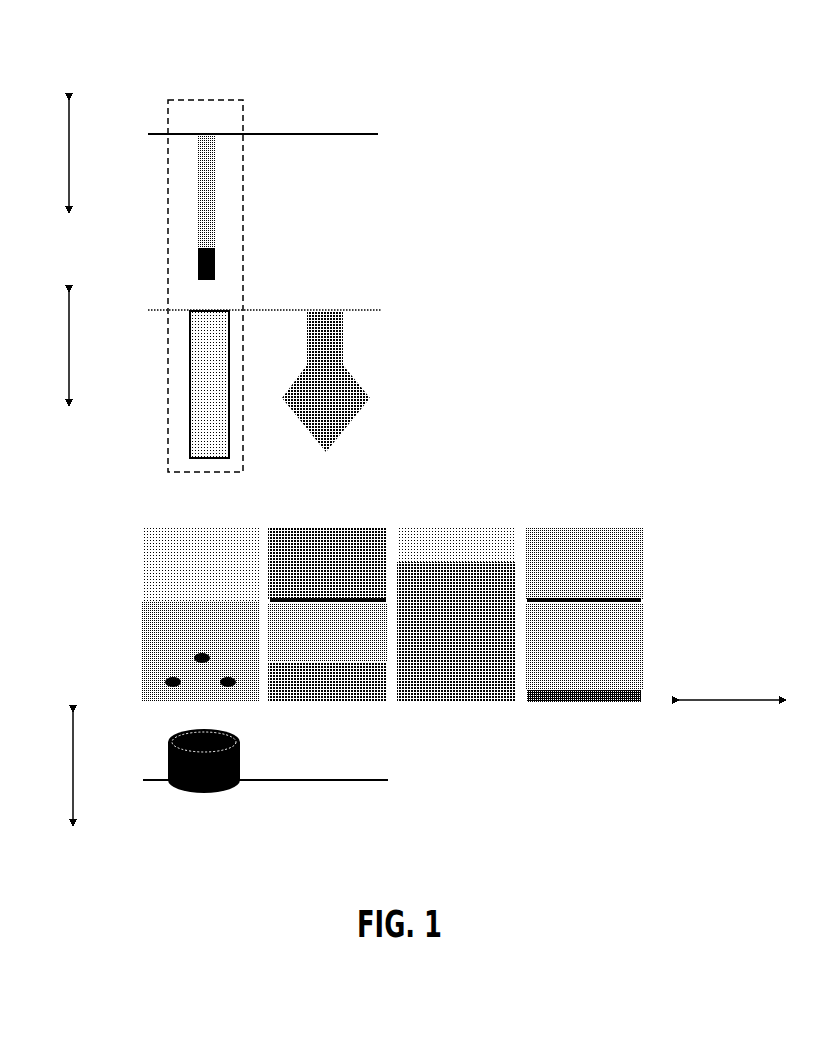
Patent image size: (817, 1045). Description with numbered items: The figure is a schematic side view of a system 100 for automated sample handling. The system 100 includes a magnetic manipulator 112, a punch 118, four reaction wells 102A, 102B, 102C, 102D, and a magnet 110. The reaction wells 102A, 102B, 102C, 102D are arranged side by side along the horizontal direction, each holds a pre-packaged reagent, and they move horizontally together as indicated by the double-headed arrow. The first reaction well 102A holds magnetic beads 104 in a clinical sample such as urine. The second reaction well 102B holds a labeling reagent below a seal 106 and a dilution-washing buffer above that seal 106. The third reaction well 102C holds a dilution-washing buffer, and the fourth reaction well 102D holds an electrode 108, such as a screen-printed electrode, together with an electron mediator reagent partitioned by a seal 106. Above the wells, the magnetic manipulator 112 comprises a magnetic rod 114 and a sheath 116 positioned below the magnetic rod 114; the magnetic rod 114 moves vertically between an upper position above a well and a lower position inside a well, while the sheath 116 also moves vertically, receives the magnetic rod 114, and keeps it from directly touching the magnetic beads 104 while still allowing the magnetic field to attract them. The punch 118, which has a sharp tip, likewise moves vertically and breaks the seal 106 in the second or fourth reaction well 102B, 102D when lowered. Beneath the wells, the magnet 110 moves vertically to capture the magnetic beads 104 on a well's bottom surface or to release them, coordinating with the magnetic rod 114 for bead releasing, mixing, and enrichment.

The system 100 is at (382, 40).
The first reaction well 102A is at (215, 528).
The second reaction well 102B is at (333, 528).
The third reaction well 102C is at (467, 528).
The fourth reaction well 102D is at (590, 528).
The magnetic beads 104 is at (168, 677).
The seal 106 is at (360, 602).
The electrode 108 is at (585, 698).
The magnet 110 is at (198, 795).
The magnetic manipulator 112 is at (246, 123).
The magnetic rod 114 is at (212, 242).
The sheath 116 is at (230, 325).
The punch 118 is at (357, 372).